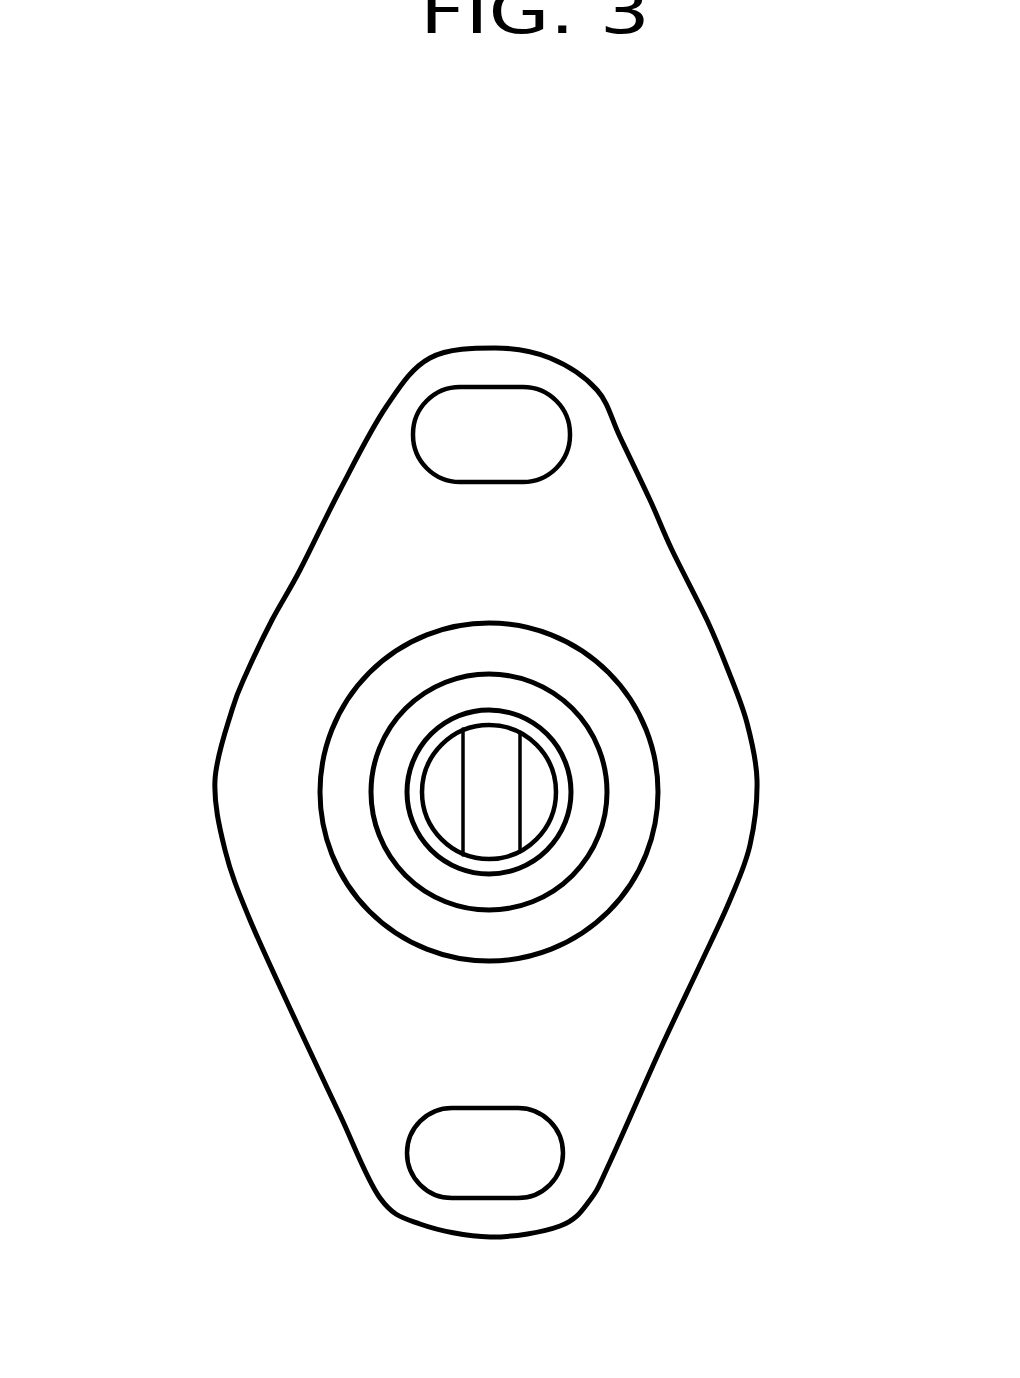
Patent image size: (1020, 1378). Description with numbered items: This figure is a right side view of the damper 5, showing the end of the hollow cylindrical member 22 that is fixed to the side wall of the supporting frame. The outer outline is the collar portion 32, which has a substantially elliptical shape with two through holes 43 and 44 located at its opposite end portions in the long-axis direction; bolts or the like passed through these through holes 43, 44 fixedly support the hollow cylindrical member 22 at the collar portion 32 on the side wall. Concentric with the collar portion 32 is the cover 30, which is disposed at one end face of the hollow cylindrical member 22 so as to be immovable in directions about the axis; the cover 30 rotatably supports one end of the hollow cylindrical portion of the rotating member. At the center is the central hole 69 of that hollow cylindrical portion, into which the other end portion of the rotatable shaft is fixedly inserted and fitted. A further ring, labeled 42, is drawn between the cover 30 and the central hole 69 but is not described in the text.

The damper 5 is at (442, 792).
The hollow cylindrical member 22 is at (420, 792).
The cover 30 is at (438, 712).
The collar portion 32 is at (630, 560).
The bore 42 is at (585, 777).
The through hole 43 is at (440, 433).
The through hole 44 is at (533, 1163).
The central hole 69 is at (485, 817).